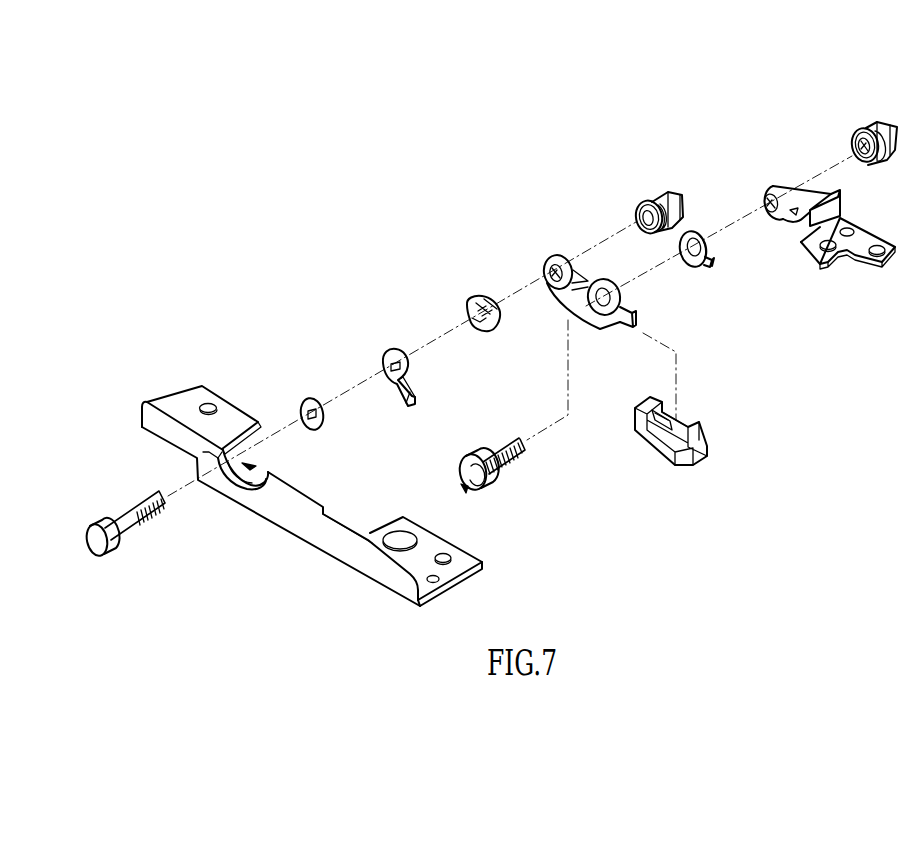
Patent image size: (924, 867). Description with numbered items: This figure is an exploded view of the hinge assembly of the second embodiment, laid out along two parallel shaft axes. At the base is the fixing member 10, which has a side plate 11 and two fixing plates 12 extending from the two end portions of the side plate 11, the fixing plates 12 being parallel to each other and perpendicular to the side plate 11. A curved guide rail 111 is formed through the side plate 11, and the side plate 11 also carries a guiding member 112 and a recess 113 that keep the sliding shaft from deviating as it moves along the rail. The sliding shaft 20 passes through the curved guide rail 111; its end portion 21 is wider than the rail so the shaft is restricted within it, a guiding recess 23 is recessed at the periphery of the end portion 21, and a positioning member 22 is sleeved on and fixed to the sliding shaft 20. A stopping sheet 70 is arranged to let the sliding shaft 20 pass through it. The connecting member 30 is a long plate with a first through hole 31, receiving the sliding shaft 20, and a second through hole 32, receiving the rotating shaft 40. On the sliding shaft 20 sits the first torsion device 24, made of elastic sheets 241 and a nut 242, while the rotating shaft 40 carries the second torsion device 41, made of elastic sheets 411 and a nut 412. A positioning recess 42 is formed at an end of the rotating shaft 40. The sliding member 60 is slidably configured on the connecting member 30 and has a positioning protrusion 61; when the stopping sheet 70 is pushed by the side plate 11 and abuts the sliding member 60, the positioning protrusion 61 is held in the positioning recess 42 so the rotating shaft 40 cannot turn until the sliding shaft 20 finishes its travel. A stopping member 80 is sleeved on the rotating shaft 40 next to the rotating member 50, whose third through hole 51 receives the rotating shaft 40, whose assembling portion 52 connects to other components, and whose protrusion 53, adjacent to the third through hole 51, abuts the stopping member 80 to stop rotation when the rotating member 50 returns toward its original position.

The fixing member 10 is at (312, 502).
The side plate 11 is at (347, 557).
The fixing plate 12 is at (198, 406).
The curved guide rail 111 is at (240, 503).
The guiding member 112 is at (220, 470).
The recess 113 is at (254, 468).
The sliding shaft 20 is at (113, 514).
The end portion 21 is at (87, 541).
The guiding recess 23 is at (106, 519).
The positioning member 22 is at (474, 306).
The stopping sheet 70 is at (386, 358).
The connecting member 30 is at (576, 287).
The first through hole 31 is at (558, 258).
The second through hole 32 is at (603, 312).
The stopping member 80 is at (694, 268).
The first torsion device 24 is at (649, 183).
The elastic sheets 241 is at (638, 210).
The nut 242 is at (671, 186).
The rotating shaft 40 is at (492, 487).
The positioning recess 42 is at (464, 490).
The sliding member 60 is at (667, 446).
The positioning protrusion 61 is at (650, 436).
The rotating member 50 is at (817, 252).
The third through hole 51 is at (768, 220).
The assembling portion 52 is at (846, 254).
The protrusion 53 is at (786, 218).
The second torsion device 41 is at (864, 110).
The elastic sheets 411 is at (851, 142).
The nut 412 is at (886, 119).